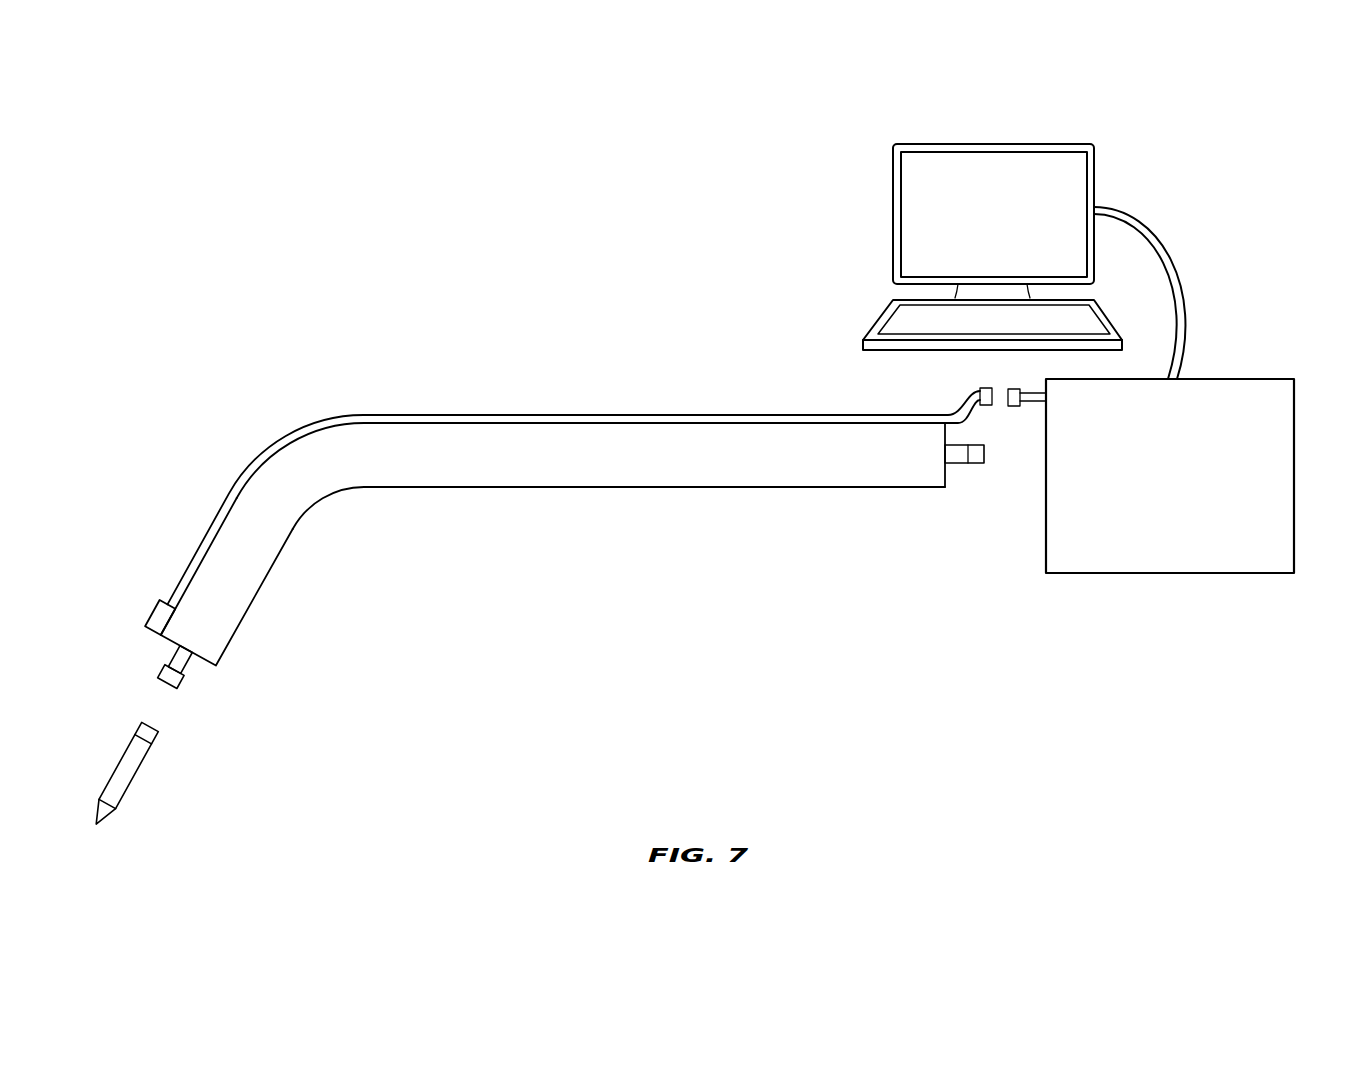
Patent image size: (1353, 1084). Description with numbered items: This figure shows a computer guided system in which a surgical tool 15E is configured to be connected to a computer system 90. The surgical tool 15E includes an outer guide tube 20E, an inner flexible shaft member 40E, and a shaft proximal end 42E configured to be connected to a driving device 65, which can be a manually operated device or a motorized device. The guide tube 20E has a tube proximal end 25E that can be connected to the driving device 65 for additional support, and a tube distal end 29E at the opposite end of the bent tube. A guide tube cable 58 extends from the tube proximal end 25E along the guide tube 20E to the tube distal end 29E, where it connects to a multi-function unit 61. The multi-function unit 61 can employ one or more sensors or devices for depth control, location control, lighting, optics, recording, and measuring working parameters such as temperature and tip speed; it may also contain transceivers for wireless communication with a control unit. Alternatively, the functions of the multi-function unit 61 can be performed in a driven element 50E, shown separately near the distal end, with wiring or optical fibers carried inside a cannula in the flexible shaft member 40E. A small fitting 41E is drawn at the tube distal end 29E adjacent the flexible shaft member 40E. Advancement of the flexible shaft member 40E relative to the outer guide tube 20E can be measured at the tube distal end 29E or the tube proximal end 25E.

The surgical tool 15E is at (258, 339).
The computer system 90 is at (893, 213).
The driving device 65 is at (1283, 436).
The guide tube cable 58 is at (360, 413).
The outer guide tube 20E is at (655, 487).
The tube distal end 29E is at (224, 655).
The tube proximal end 25E is at (925, 487).
The shaft proximal end 42E is at (975, 464).
The multi-function unit 61 is at (160, 612).
The distal fitting 41E is at (174, 661).
The inner flexible shaft member 40E is at (190, 676).
The driven element 50E is at (119, 758).